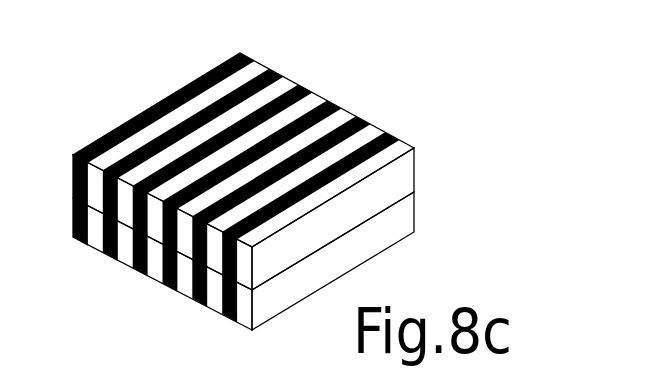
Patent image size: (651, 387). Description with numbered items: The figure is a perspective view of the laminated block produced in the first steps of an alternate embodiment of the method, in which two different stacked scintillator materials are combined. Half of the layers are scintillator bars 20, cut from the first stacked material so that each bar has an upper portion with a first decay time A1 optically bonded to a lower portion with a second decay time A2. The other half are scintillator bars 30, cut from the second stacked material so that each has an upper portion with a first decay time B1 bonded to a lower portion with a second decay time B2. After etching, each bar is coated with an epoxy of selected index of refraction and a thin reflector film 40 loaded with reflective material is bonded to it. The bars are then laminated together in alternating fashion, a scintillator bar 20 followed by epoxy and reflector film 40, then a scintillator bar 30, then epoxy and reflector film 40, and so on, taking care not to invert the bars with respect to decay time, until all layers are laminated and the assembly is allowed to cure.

The scintillator bar 20 is at (262, 65).
The scintillator bar 30 is at (77, 240).
The reflector film 40 is at (400, 141).
The first decay time A1 is at (405, 176).
The second decay time A2 is at (405, 211).
The first decay time B1 is at (73, 180).
The second decay time B2 is at (73, 220).